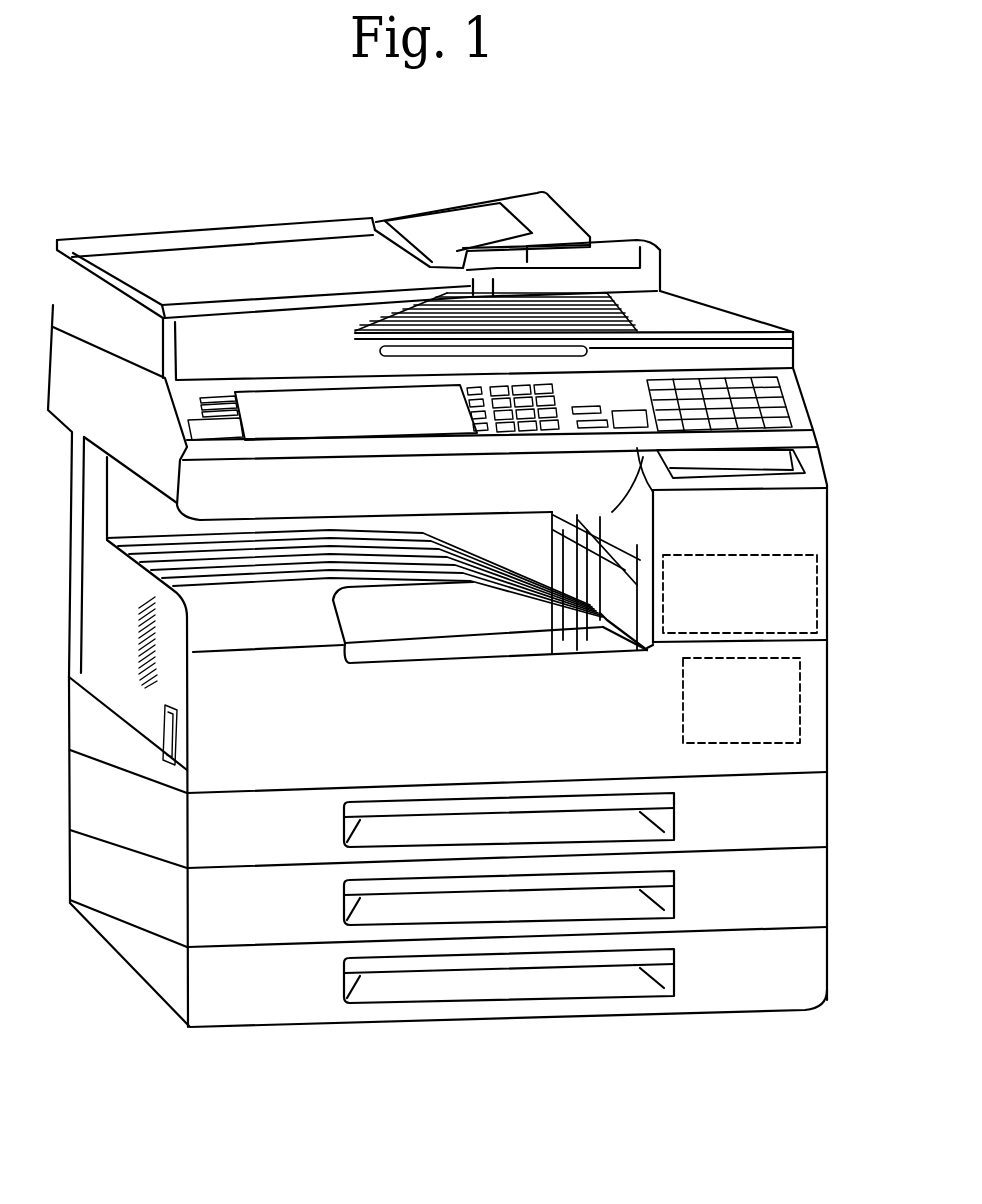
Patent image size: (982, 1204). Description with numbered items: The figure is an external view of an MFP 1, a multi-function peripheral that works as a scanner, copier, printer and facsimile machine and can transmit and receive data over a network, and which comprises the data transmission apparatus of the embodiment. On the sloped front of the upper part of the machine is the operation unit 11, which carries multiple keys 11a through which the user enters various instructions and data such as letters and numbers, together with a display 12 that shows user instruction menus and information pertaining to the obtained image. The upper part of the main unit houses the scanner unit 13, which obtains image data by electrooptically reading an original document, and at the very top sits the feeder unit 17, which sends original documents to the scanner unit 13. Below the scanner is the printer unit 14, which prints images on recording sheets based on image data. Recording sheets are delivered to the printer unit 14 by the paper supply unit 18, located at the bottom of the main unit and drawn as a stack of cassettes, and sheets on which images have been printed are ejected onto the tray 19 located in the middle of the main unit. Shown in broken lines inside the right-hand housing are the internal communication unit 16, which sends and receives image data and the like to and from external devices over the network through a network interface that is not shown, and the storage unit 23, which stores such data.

The MFP 1 is at (157, 113).
The operation unit 11 is at (585, 392).
The keys 11a is at (547, 433).
The display 12 is at (408, 420).
The scanner unit 13 is at (46, 296).
The printer unit 14 is at (836, 535).
The communication unit 16 is at (680, 707).
The feeder unit 17 is at (285, 257).
The paper supply unit 18 is at (150, 800).
The tray 19 is at (470, 583).
The storage unit 23 is at (742, 552).